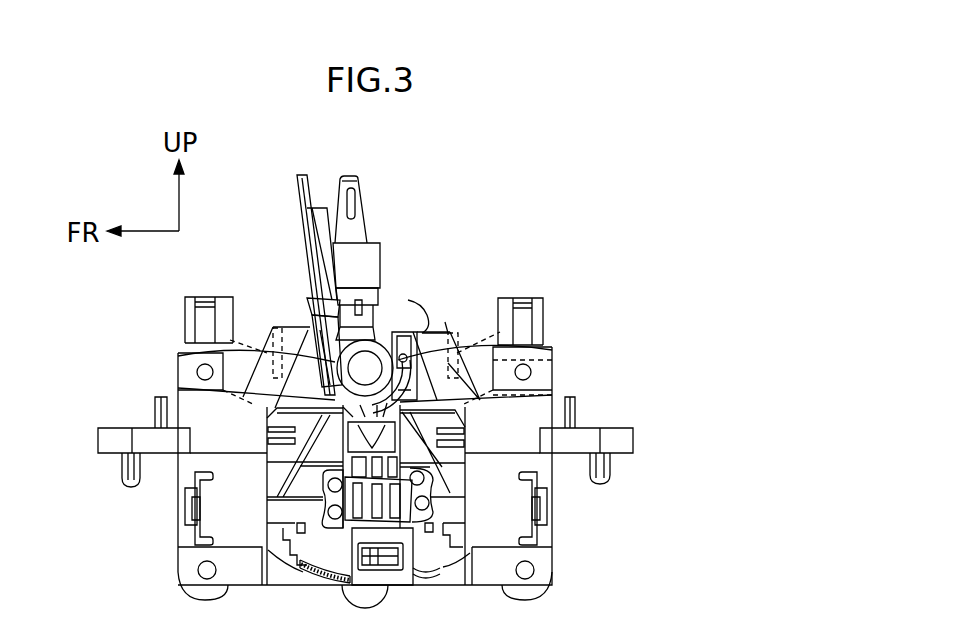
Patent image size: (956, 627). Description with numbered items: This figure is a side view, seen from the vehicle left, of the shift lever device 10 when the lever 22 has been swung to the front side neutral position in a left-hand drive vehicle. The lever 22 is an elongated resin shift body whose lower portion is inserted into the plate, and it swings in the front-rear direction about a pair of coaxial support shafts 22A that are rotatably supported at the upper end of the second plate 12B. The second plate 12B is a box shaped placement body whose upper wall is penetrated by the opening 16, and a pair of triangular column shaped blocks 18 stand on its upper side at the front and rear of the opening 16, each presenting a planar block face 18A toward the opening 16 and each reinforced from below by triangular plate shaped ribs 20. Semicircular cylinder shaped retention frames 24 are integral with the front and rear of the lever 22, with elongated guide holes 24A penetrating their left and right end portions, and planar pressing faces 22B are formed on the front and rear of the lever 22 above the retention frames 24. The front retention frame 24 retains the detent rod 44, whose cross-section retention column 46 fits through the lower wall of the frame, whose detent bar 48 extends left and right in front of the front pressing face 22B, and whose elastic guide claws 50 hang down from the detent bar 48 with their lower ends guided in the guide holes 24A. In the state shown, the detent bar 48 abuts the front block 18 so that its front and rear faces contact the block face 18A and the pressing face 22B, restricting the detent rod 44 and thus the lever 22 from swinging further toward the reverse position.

The shift lever device 10 is at (483, 228).
The second plate 12B is at (555, 346).
The opening 16 is at (403, 328).
The block 18 is at (300, 320).
The block face 18A is at (308, 302).
The rib 20 is at (230, 297).
The lever 22 is at (363, 192).
The support shaft 22A is at (500, 395).
The planar pressing face 22B is at (362, 255).
The retention frame 24 is at (305, 352).
The guide hole 24A is at (500, 360).
The detent rod 44 is at (297, 177).
The retention column 46 is at (178, 387).
The detent bar 48 is at (303, 240).
The guide claw 50 is at (178, 356).